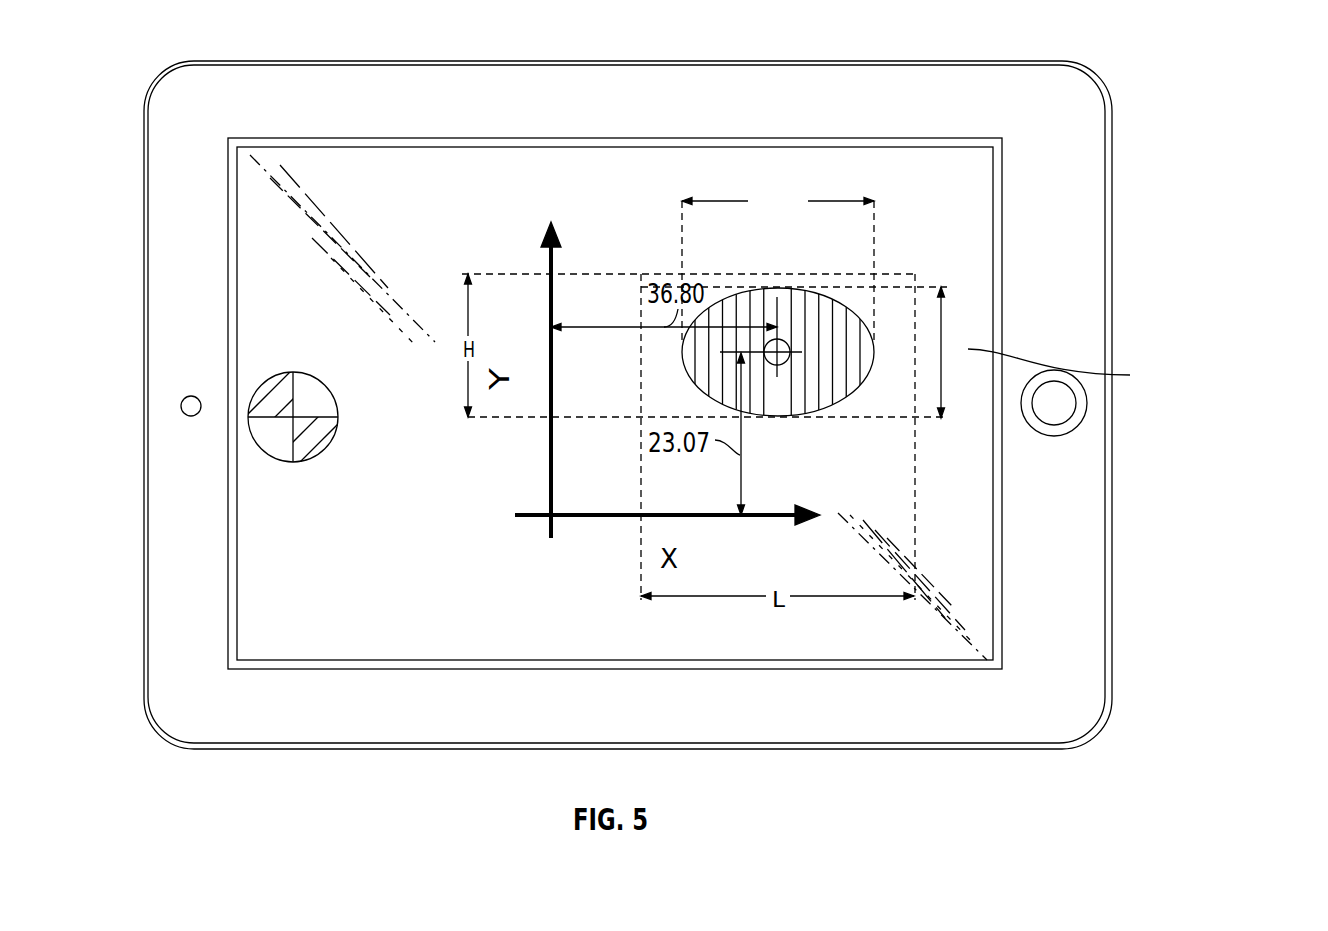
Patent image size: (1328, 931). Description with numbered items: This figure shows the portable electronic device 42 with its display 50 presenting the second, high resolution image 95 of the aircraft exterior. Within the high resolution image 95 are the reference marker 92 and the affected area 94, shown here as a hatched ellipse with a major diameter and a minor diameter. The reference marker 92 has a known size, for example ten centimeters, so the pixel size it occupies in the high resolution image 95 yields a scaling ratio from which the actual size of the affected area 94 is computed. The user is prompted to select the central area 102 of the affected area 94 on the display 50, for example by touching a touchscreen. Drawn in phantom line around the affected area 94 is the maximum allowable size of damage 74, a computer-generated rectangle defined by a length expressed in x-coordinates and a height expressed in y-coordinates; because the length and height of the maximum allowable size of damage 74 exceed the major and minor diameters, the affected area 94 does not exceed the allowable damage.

The portable electronic device 42 is at (497, 750).
The display 50 is at (882, 163).
The high resolution image 95 is at (947, 168).
The affected area 94 is at (775, 290).
The maximum allowable size of damage 74 is at (920, 313).
The central area 102 is at (786, 361).
The reference marker 92 is at (323, 452).